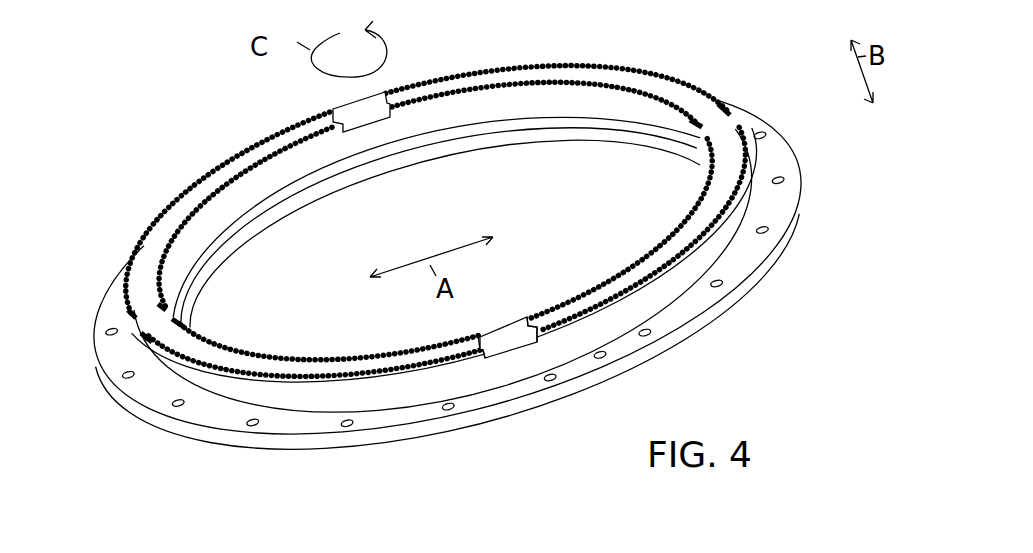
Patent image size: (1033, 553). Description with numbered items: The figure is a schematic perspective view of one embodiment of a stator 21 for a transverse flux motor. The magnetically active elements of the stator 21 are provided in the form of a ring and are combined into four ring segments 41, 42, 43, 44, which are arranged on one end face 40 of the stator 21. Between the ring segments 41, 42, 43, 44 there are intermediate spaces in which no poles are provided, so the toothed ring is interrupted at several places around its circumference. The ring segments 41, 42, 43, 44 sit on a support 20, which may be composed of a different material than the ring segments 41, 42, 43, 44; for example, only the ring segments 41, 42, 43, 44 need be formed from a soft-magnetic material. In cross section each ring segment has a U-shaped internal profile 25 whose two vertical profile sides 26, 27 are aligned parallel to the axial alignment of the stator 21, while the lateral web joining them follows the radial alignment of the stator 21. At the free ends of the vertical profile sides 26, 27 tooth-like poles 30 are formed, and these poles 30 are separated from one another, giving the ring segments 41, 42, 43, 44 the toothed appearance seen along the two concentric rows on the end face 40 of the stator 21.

The support 20 is at (776, 239).
The stator 21 is at (760, 86).
The internal profile 25 is at (145, 326).
The vertical profile side 26 is at (485, 358).
The vertical profile side 27 is at (467, 362).
The poles 30 is at (563, 328).
The end face 40 is at (790, 148).
The ring segment 41 is at (221, 166).
The ring segment 42 is at (668, 73).
The ring segment 43 is at (660, 272).
The ring segment 44 is at (270, 380).